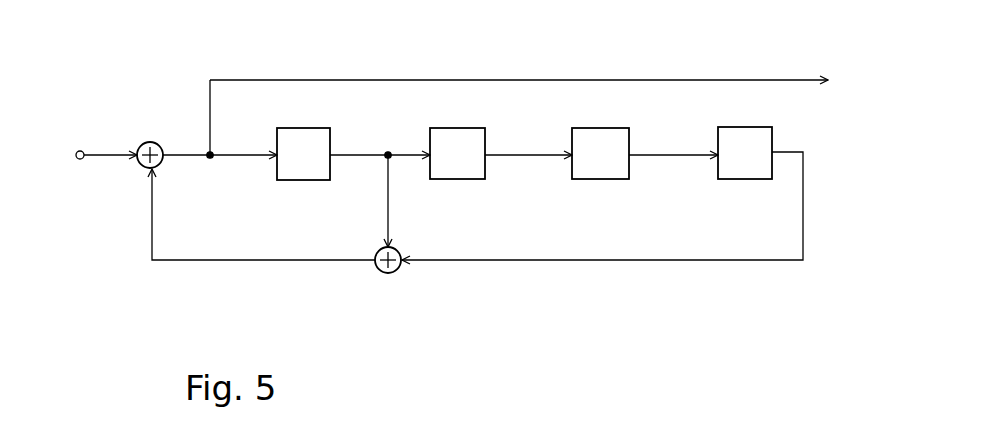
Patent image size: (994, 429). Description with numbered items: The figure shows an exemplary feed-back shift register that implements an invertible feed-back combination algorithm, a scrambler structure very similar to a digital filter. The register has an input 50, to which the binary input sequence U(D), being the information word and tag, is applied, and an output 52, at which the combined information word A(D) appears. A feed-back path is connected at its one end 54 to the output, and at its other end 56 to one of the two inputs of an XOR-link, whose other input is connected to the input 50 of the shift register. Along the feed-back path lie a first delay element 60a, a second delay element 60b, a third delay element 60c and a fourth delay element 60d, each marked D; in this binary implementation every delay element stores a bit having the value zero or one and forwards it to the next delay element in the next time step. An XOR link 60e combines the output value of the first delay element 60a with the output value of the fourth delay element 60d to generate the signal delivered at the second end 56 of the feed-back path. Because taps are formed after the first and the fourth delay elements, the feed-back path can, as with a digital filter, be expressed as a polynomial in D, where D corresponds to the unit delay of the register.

The input 50 is at (78, 160).
The output 52 is at (827, 76).
The one end of the feed-back path 54 is at (212, 158).
The other end of the feed-back path 56 is at (137, 167).
The first delay element 60a is at (298, 128).
The second delay element 60b is at (453, 128).
The third delay element 60c is at (595, 128).
The fourth delay element 60d is at (733, 127).
The XOR link 60e is at (395, 271).